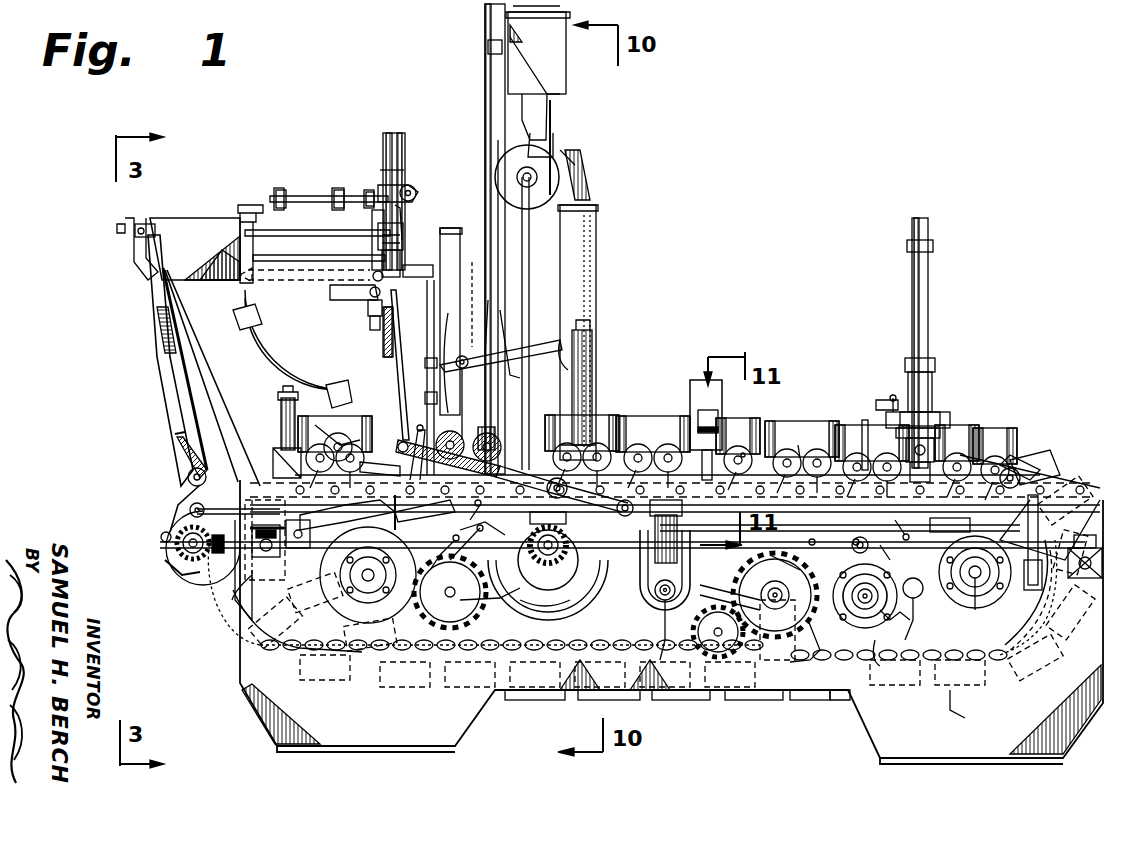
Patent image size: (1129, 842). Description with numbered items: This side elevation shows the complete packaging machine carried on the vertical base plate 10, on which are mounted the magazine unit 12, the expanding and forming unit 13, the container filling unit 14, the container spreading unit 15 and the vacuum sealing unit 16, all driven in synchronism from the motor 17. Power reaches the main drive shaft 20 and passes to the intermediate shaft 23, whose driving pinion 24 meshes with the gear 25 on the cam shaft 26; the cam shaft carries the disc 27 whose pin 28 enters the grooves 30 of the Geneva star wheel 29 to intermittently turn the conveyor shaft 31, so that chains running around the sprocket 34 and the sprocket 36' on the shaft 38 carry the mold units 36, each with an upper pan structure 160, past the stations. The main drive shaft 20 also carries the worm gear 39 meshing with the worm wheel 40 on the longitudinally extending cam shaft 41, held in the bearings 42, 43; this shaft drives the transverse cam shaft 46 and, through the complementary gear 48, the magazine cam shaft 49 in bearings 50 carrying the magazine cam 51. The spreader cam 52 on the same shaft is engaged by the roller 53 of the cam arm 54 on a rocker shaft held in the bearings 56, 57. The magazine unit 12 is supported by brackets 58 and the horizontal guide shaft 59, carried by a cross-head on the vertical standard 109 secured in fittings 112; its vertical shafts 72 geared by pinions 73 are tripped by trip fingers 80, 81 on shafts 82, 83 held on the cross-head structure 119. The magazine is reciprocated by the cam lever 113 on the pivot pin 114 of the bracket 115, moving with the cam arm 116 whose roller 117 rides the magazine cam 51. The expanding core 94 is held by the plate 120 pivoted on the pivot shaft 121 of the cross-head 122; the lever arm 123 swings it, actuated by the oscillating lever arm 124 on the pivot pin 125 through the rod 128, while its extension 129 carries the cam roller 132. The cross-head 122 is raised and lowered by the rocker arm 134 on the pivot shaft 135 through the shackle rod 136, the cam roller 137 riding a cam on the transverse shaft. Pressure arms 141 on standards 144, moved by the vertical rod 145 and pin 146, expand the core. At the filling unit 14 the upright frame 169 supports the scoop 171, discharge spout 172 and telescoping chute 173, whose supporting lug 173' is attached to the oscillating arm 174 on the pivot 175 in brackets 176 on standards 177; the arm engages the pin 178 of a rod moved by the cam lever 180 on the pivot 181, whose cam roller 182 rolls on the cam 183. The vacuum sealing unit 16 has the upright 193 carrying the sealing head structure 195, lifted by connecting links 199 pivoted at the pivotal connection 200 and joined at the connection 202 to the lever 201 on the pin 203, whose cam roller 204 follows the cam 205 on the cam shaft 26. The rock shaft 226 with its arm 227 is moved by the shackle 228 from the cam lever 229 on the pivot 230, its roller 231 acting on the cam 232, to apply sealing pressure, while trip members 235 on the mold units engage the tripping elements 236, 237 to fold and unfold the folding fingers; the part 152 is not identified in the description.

The vertical base plate frame element 10 is at (290, 710).
The magazine unit 12 is at (196, 222).
The expanding and forming unit 13 is at (418, 180).
The container filling unit 14 is at (602, 232).
The container spreading unit 15 is at (708, 362).
The vacuum sealing unit 16 is at (942, 366).
The motor 17 is at (425, 688).
The main drive shaft 20 is at (658, 598).
The intermediate shaft 23 is at (785, 552).
The driving pinion 24 is at (748, 640).
The gear 25 is at (830, 698).
The cam shaft 26 is at (860, 606).
The disc 27 is at (880, 661).
The pin 28 is at (884, 628).
The Geneva star wheel 29 is at (955, 712).
The grooves 30 is at (1045, 668).
The conveyor shaft 31 is at (975, 605).
The sprocket 34 is at (1052, 612).
The mold unit 36 is at (632, 562).
The sprocket 36' is at (281, 628).
The shaft 38 is at (388, 578).
The worm gear 39 is at (665, 640).
The worm wheel 40 is at (655, 530).
The longitudinally extending cam shaft 41 is at (290, 558).
The bearing 42 is at (250, 620).
The bearing 43 is at (1068, 505).
The transverse cam shaft 46 is at (466, 598).
The complementary gear 48 is at (178, 565).
The magazine cam shaft 49 is at (177, 546).
The bearings 50 is at (238, 480).
The magazine cam 51 is at (175, 577).
The spreader cam 52 is at (1085, 580).
The roller 53 is at (1026, 535).
The cam arm 54 is at (1050, 480).
The bearing 56 is at (740, 450).
The bearing 57 is at (1025, 472).
The brackets 58 is at (126, 262).
The horizontal guide shaft 59 is at (314, 250).
The shafts 72 is at (253, 254).
The pinions 73 is at (247, 205).
The trip finger 80 is at (336, 190).
The trip finger 81 is at (277, 206).
The shaft 82 is at (370, 190).
The shaft 83 is at (292, 190).
The expanding core 94 is at (322, 292).
The vertical standard 109 is at (404, 137).
The fittings 112 is at (384, 516).
The cam lever 113 is at (162, 356).
The pivot pin 114 is at (190, 465).
The bracket 115 is at (178, 434).
The cam arm 116 is at (176, 507).
The roller 117 is at (162, 534).
The cross-head structure 119 is at (406, 208).
The plate 120 is at (340, 278).
The pivot shaft 121 is at (368, 294).
The cross-head 122 is at (370, 322).
The lever arm 123 is at (460, 232).
The oscillating lever arm 124 is at (350, 513).
The pivot pin 125 is at (300, 520).
The rod 128 is at (394, 335).
The extension 129 is at (232, 600).
The cam roller 132 is at (188, 478).
The rocker arm 134 is at (568, 440).
The pivot shaft 135 is at (596, 570).
The shackle rod 136 is at (416, 368).
The cam roller 137 is at (335, 440).
The pressure arms 141 is at (436, 270).
The standards 144 is at (450, 232).
The vertical rod 145 is at (380, 425).
The pin 146 is at (420, 250).
The curved guide 152 is at (268, 362).
The upper pan structure 160 is at (535, 700).
The upright frame 169 is at (480, 47).
The scoop 171 is at (565, 78).
The discharge spout 172 is at (572, 180).
The telescoping chute 173 is at (605, 382).
The supporting lug 173' is at (596, 359).
The oscillating arm 174 is at (457, 368).
The pivot 175 is at (469, 404).
The brackets 176 is at (484, 355).
The standards 177 is at (488, 72).
The pin 178 is at (451, 357).
The cam lever 180 is at (474, 512).
The pivot 181 is at (472, 575).
The cam roller 182 is at (492, 560).
The cam 183 is at (530, 600).
The upright 193 is at (930, 288).
The sealing head structure 195 is at (945, 418).
The connecting links 199 is at (935, 460).
The pivotal connection 200 is at (940, 440).
The lever 201 is at (790, 593).
The connection 202 is at (950, 532).
The pin 203 is at (718, 632).
The cam roller 204 is at (912, 609).
The cam 205 is at (820, 660).
The rock shaft 226 is at (893, 395).
The arm 227 is at (882, 400).
The shackle 228 is at (863, 434).
The cam lever 229 is at (855, 540).
The pivot 230 is at (810, 540).
The roller 231 is at (891, 523).
The cam 232 is at (873, 544).
The trip members 235 is at (800, 442).
The tripping element 236 is at (782, 460).
The tripping element 237 is at (990, 455).